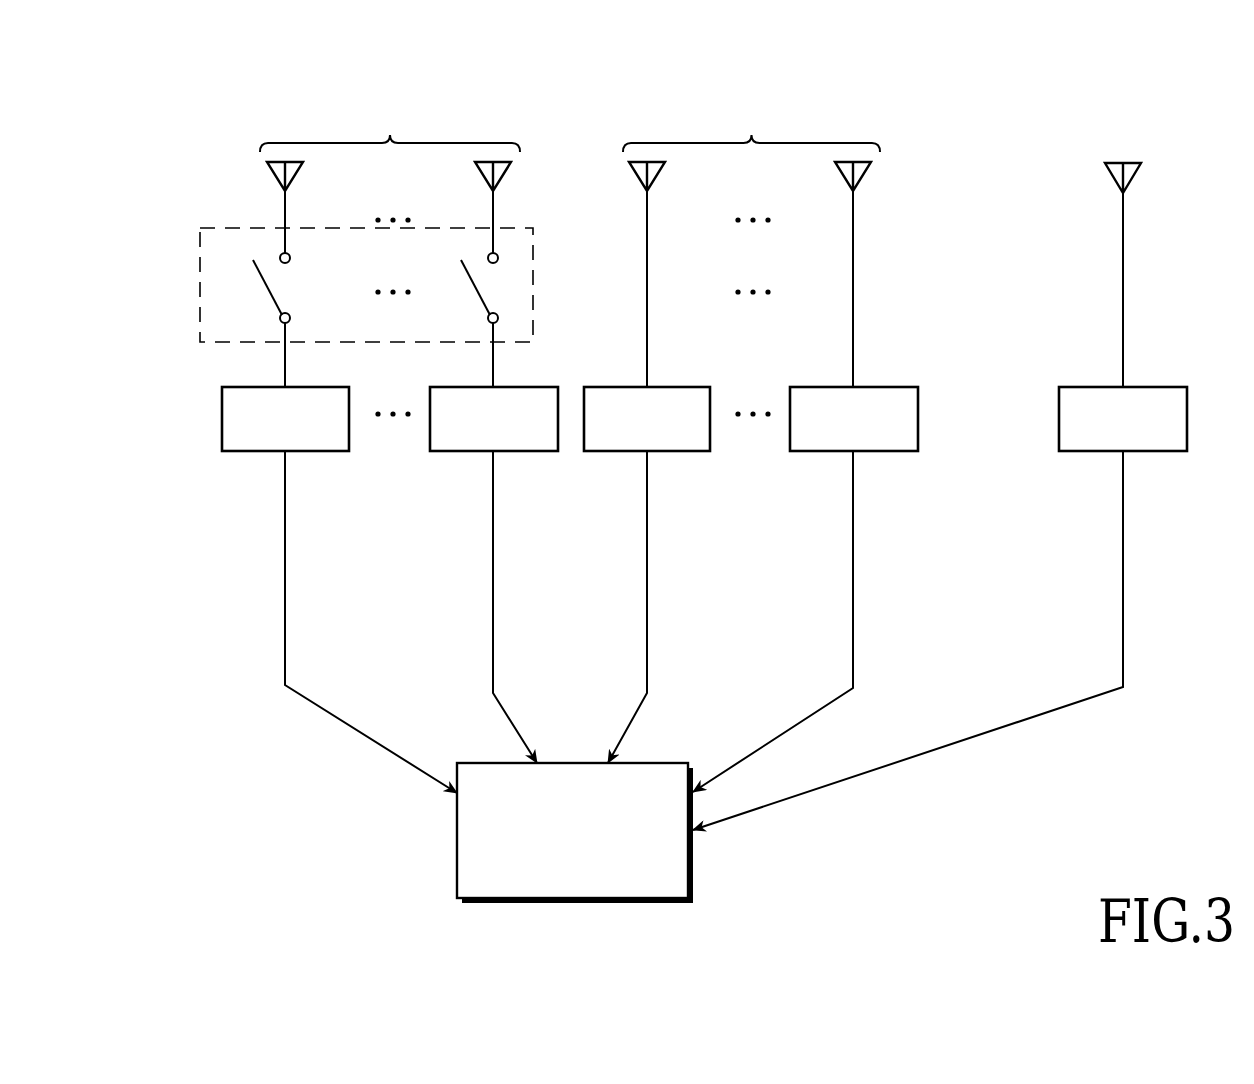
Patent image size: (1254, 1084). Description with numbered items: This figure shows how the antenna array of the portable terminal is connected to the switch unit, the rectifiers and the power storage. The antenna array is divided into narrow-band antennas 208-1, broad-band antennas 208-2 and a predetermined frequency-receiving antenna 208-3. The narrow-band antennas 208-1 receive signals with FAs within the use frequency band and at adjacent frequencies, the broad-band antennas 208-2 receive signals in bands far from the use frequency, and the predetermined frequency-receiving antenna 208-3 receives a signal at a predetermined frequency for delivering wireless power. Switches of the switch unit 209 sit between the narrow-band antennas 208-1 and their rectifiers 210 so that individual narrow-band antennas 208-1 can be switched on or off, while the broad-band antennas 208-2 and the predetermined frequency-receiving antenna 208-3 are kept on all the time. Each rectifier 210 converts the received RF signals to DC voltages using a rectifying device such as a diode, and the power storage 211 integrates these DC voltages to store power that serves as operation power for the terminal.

The narrow-band antennas 208-1 is at (390, 159).
The broad-band antennas 208-2 is at (751, 226).
The predetermined frequency-receiving antenna 208-3 is at (1112, 227).
The switch unit 209 is at (200, 288).
The rectifier 210 is at (250, 453).
The power storage 211 is at (458, 831).